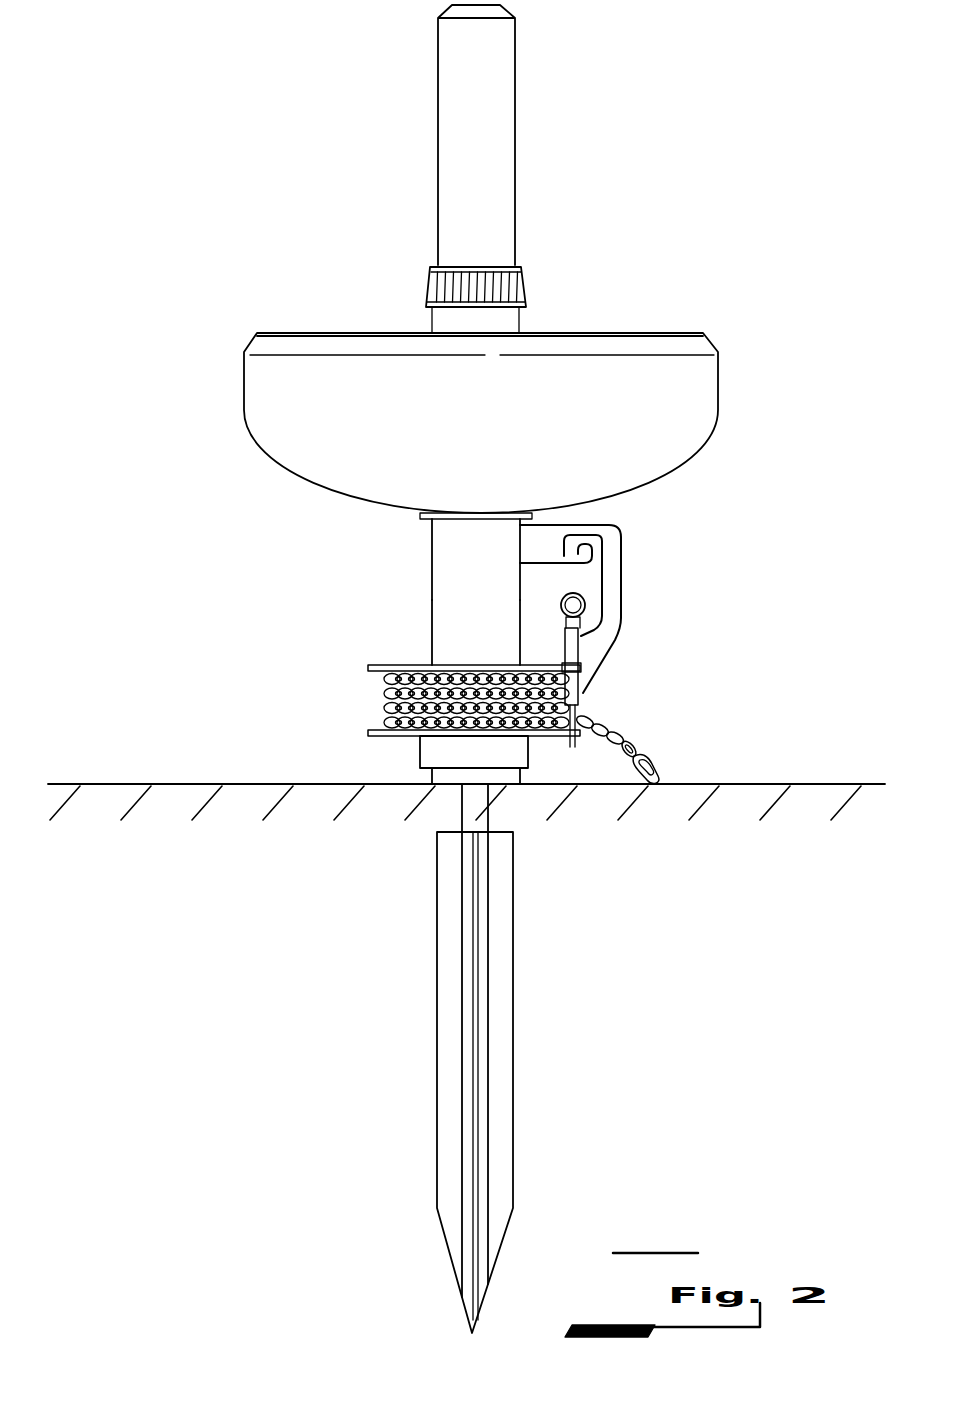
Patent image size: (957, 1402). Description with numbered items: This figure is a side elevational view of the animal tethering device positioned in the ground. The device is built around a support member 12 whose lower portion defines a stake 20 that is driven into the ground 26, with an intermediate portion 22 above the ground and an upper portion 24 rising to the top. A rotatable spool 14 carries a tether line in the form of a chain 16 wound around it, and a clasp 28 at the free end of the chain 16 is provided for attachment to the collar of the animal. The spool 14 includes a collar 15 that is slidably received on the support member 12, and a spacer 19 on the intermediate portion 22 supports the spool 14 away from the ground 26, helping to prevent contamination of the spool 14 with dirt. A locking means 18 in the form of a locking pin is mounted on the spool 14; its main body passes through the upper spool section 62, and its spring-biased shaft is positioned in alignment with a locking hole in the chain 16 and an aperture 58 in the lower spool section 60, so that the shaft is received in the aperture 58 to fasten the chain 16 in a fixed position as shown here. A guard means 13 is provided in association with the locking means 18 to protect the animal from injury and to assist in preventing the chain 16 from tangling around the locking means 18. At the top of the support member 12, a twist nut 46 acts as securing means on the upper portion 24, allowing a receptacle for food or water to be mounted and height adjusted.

The support member 12 is at (481, 262).
The upper portion 24 is at (494, 45).
The twist nut 46 is at (510, 292).
The collar 15 is at (447, 560).
The intermediate portion 22 is at (447, 600).
The spool 14 is at (385, 666).
The chain 16 is at (385, 700).
The spacer 19 is at (430, 752).
The guard means 13 is at (613, 573).
The locking means 18 is at (590, 652).
The upper spool section 62 is at (582, 680).
The lower spool section 60 is at (598, 726).
The aperture 58 is at (632, 745).
The clasp 28 is at (665, 772).
The ground 26 is at (466, 808).
The stake 20 is at (500, 1072).